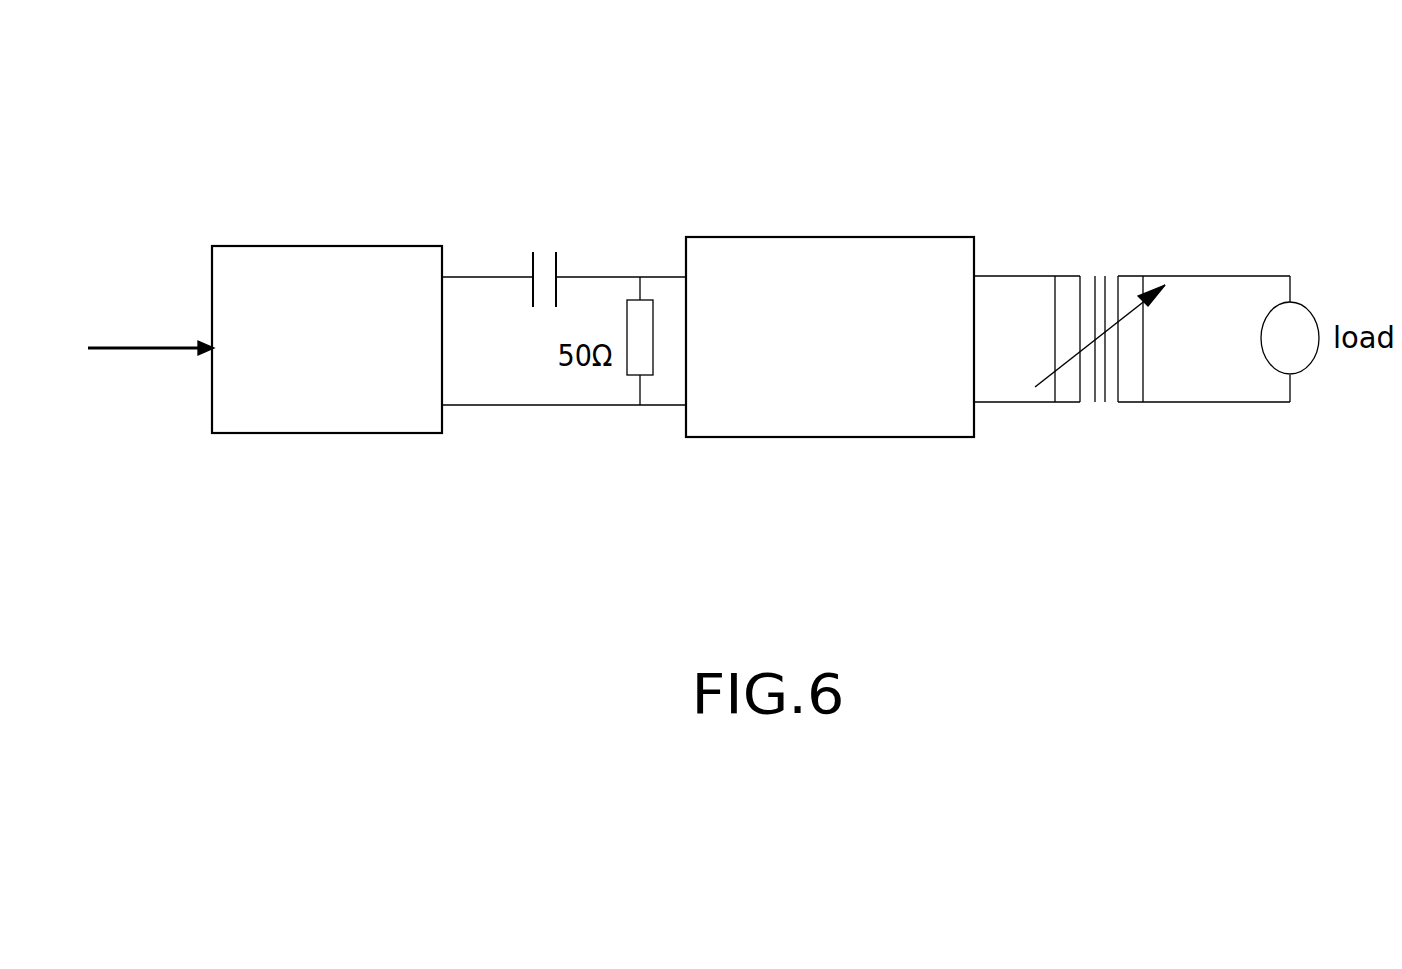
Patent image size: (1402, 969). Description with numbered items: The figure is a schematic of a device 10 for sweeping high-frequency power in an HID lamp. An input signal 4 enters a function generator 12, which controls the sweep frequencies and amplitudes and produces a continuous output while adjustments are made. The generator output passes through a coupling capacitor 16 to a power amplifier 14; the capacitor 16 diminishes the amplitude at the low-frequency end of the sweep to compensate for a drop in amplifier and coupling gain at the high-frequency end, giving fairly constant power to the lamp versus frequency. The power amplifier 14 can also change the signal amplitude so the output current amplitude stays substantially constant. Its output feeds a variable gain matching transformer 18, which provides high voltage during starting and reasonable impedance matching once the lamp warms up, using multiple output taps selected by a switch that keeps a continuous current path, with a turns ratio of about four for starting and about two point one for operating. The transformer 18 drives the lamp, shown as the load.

The input signal 4 is at (104, 347).
The device 10 is at (985, 165).
The function generator 12 is at (420, 434).
The power amplifier 14 is at (843, 437).
The capacitor 16 is at (543, 252).
The variable gain matching transformer 18 is at (1112, 265).